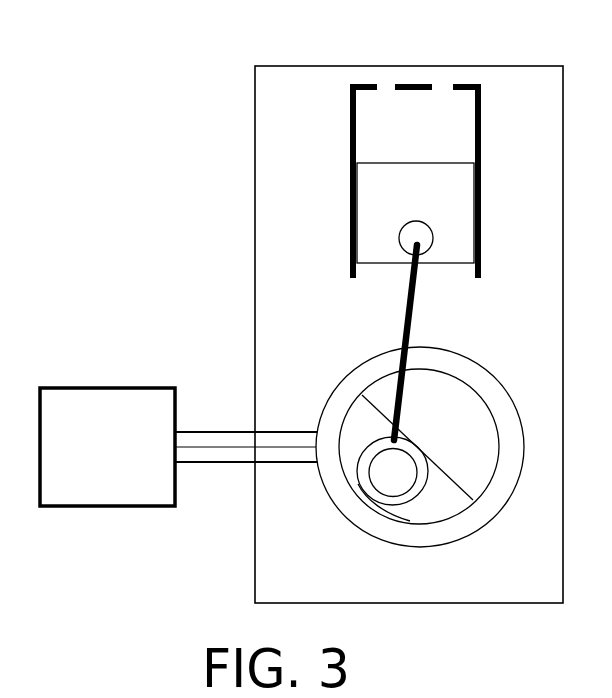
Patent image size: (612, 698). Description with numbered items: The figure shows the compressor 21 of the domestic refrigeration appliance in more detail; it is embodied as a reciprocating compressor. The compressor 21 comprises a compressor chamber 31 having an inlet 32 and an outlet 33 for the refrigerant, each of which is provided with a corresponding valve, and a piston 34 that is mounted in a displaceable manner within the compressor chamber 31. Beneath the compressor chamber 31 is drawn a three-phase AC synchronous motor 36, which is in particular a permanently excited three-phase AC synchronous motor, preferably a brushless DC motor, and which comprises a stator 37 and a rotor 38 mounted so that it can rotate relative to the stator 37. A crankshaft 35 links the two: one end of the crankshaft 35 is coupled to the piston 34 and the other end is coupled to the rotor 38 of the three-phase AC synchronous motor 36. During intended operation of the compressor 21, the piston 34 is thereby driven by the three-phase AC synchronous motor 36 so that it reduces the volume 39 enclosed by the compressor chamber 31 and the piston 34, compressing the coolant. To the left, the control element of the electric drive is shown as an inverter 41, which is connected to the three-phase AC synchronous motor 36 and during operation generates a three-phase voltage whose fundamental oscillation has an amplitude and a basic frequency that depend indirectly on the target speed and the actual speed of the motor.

The compressor 21 is at (221, 180).
The compressor chamber 31 is at (496, 136).
The inlet 32 is at (375, 85).
The outlet 33 is at (459, 88).
The piston 34 is at (433, 214).
The crankshaft 35 is at (400, 327).
The three-phase AC synchronous motor 36 is at (323, 547).
The stator 37 is at (470, 362).
The rotor 38 is at (468, 470).
The volume 39 is at (361, 127).
The inverter 41 is at (91, 462).